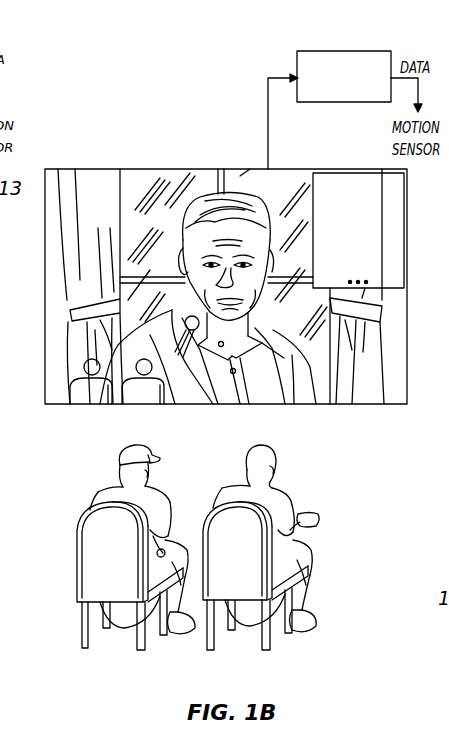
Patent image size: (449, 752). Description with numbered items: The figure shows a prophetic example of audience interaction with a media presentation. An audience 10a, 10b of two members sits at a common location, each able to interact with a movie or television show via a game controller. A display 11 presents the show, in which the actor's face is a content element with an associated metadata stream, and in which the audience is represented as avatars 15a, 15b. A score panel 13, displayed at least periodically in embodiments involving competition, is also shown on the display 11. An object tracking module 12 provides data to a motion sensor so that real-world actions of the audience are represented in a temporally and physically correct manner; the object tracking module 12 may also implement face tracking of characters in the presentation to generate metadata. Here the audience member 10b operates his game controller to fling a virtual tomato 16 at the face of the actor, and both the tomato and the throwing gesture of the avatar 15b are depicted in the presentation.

The audience member 10a is at (80, 580).
The audience member 10b is at (305, 583).
The display 11 is at (86, 176).
The object tracking module 12 is at (345, 51).
The score panel 13 is at (404, 190).
The avatar 15a is at (85, 405).
The avatar 15b is at (135, 405).
The virtual tomato 16 is at (208, 299).